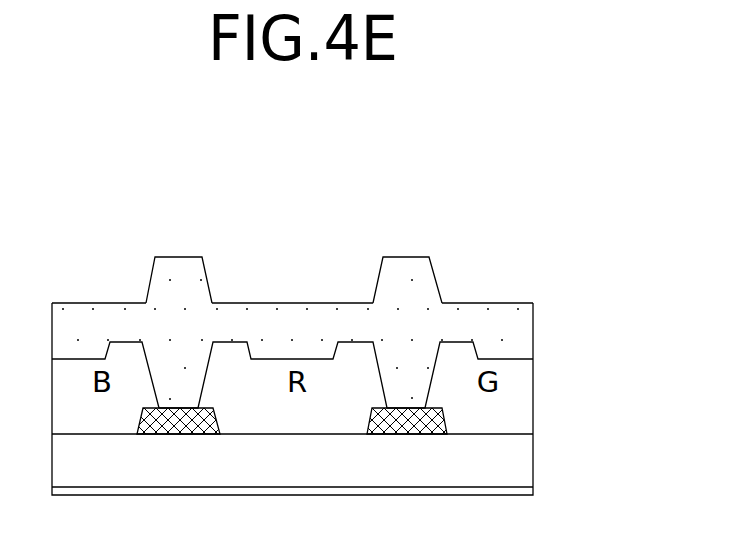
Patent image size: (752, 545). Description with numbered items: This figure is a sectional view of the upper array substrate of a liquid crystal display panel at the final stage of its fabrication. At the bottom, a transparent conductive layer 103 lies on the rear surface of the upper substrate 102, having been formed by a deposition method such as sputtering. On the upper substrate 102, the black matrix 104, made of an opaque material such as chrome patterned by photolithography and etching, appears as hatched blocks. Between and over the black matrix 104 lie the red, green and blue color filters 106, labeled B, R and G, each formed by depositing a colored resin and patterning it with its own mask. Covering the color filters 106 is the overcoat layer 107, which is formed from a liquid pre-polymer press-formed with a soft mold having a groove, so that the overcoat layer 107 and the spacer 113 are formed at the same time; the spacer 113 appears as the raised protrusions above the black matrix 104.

The upper substrate 102 is at (527, 455).
The transparent conductive layer 103 is at (527, 493).
The black matrix 104 is at (410, 434).
The red, green, blue color filters 106 is at (527, 393).
The overcoat layer 107 is at (527, 322).
The spacer 113 is at (427, 273).